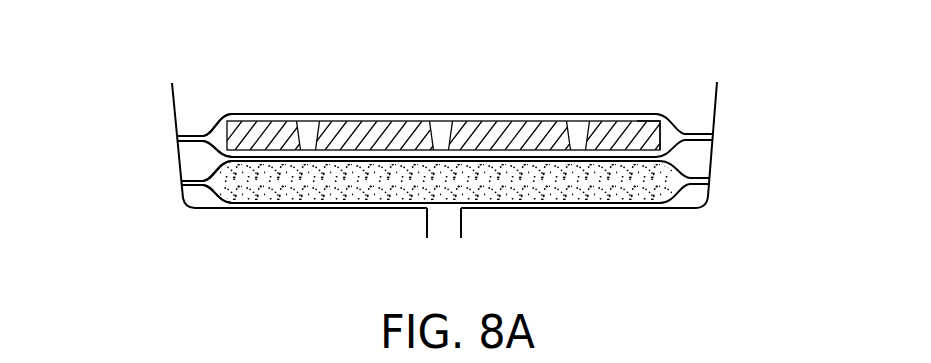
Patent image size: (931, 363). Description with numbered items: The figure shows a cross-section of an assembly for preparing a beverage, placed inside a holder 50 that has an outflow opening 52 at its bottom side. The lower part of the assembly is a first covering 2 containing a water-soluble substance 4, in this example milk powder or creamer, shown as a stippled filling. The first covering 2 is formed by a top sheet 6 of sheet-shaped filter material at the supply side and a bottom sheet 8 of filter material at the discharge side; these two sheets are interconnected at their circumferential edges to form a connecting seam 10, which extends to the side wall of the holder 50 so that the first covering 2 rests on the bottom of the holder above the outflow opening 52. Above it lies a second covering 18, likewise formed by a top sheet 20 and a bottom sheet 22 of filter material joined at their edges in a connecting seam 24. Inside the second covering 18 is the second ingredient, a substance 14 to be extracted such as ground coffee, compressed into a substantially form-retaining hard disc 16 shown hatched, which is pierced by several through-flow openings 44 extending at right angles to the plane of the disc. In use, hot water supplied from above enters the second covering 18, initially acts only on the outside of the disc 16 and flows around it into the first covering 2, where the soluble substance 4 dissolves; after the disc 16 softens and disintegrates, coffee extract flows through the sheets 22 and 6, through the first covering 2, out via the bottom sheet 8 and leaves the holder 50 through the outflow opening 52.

The first covering 2 is at (628, 202).
The water-soluble substance 4 is at (580, 185).
The top sheet 6 is at (223, 202).
The bottom sheet 8 is at (220, 174).
The connecting seam 10 is at (198, 180).
The substance to be extracted 14 is at (272, 132).
The disc 16 is at (637, 120).
The second covering 18 is at (510, 113).
The top sheet 20 is at (223, 117).
The bottom sheet 22 is at (223, 152).
The connecting seam 24 is at (197, 137).
The through-flow openings 44 is at (445, 128).
The holder 50 is at (717, 102).
The outflow opening 52 is at (442, 227).